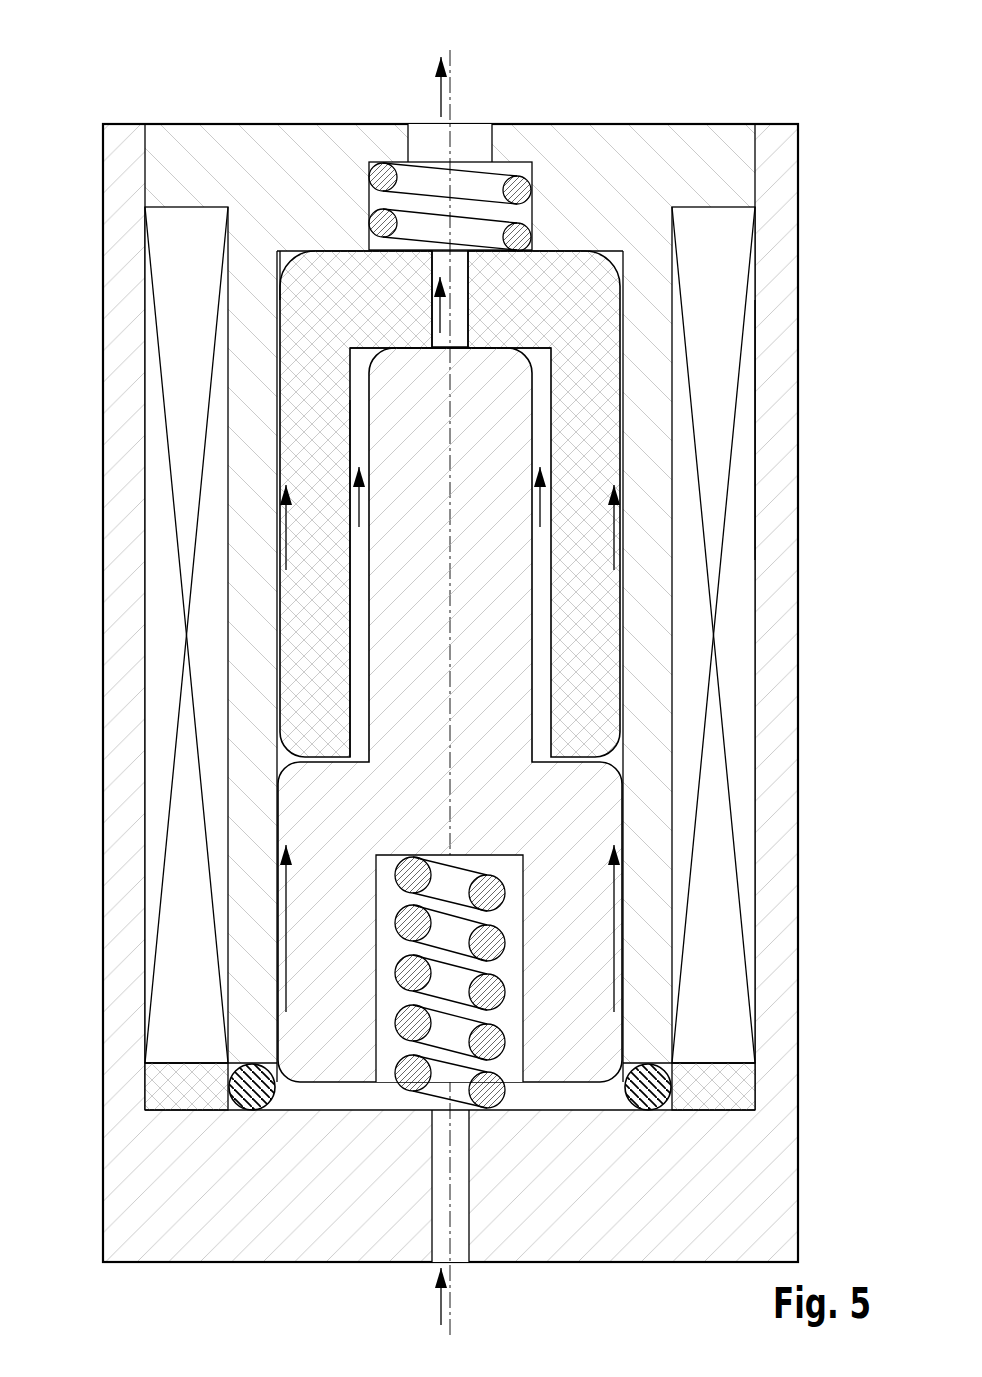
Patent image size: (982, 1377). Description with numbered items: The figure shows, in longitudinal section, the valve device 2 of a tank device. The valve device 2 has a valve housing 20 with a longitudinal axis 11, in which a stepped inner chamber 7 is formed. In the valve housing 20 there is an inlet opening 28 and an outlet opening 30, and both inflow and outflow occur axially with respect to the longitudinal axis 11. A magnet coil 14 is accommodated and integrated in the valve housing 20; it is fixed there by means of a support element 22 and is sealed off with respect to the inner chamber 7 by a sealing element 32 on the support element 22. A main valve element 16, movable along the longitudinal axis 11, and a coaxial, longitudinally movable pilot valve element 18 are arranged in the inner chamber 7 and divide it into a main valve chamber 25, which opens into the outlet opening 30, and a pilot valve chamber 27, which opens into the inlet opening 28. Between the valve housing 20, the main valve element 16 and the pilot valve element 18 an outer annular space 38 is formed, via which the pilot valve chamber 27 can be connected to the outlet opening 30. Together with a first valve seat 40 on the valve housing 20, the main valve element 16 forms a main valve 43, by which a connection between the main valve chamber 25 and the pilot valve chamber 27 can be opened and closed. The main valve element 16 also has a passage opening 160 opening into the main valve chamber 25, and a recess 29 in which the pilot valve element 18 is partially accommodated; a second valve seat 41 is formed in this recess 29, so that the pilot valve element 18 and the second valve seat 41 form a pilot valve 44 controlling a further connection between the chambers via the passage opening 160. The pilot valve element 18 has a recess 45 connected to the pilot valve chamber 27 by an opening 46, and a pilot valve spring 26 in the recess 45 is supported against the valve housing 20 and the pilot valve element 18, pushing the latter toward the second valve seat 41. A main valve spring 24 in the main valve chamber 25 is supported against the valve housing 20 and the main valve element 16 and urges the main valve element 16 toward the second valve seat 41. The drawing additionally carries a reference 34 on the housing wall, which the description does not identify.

The valve device 2 is at (780, 88).
The inner chamber 7 is at (318, 1097).
The longitudinal axis 11 is at (452, 618).
The magnet coil 14 is at (740, 376).
The main valve element 16 is at (600, 317).
The pilot valve element 18 is at (598, 803).
The valve housing 20 is at (718, 148).
The support element 22 is at (187, 1088).
The main valve spring 24 is at (515, 190).
The main valve chamber 25 is at (452, 157).
The pilot valve spring 26 is at (487, 943).
The pilot valve chamber 27 is at (582, 1095).
The inlet opening 28 is at (457, 1248).
The recess 29 is at (360, 568).
The outlet opening 30 is at (409, 137).
The sealing element 32 is at (252, 1088).
The housing wall 34 is at (760, 433).
The outer annular space 38 is at (287, 750).
The first valve seat 40 is at (310, 250).
The second valve seat 41 is at (410, 347).
The main valve 43 is at (347, 250).
The pilot valve 44 is at (277, 863).
The recess 45 is at (508, 1075).
The opening 46 is at (387, 1085).
The passage opening 160 is at (462, 288).